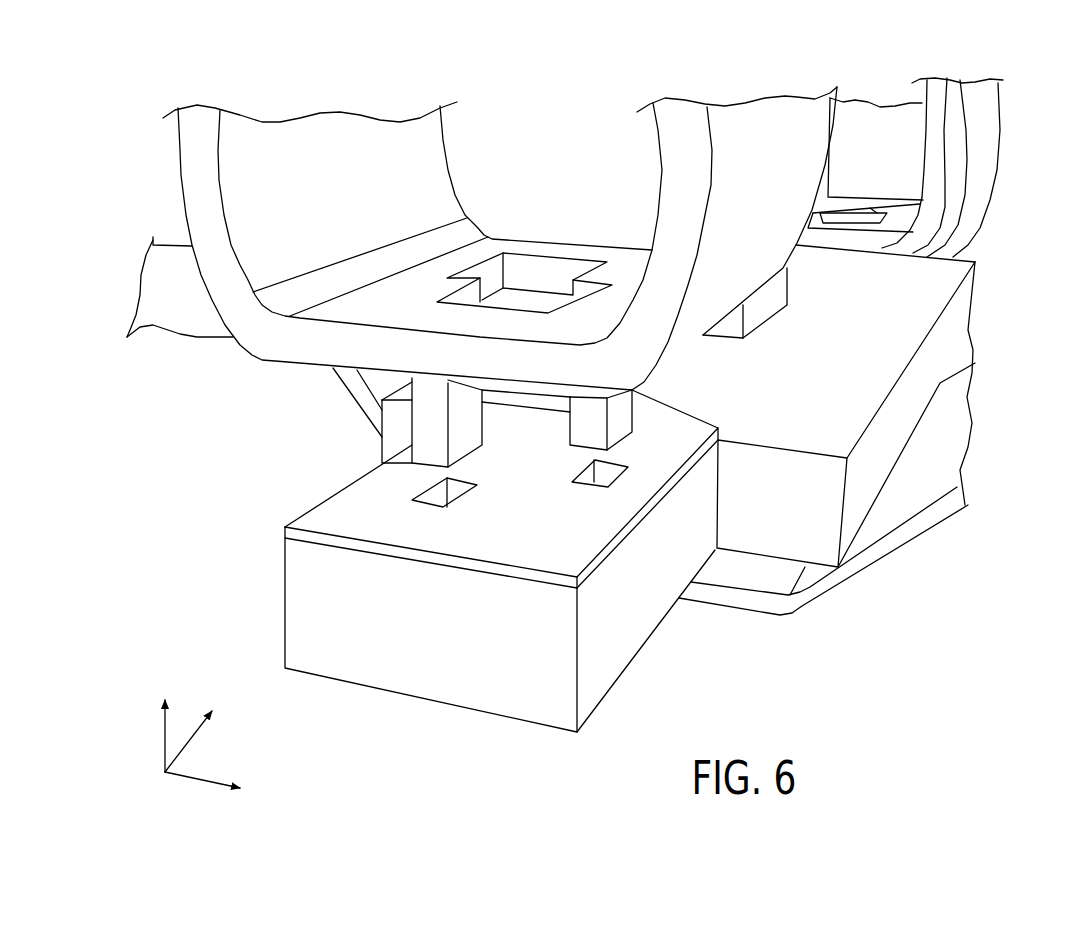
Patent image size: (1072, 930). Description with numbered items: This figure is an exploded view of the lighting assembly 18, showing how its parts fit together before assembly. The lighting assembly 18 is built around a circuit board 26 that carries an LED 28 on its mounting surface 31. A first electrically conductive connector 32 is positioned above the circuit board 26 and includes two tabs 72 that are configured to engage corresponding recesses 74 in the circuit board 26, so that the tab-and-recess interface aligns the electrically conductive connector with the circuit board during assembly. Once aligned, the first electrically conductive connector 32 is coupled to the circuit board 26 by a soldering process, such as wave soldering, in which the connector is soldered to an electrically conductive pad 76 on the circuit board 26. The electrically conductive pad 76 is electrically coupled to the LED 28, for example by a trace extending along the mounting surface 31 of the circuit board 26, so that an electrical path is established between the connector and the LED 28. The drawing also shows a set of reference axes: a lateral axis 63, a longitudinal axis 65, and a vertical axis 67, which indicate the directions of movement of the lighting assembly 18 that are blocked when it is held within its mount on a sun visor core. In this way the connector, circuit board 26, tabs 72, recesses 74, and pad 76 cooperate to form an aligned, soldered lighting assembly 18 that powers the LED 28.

The lighting assembly 18 is at (500, 224).
The circuit board 26 is at (823, 551).
The LED 28 is at (771, 303).
The mounting surface 31 is at (871, 420).
The first electrically conductive connector 32 is at (872, 118).
The lateral axis 63 is at (185, 790).
The longitudinal axis 65 is at (211, 741).
The vertical axis 67 is at (146, 726).
The tabs 72 is at (515, 417).
The recesses 74 is at (485, 575).
The electrically conductive pad 76 is at (501, 561).